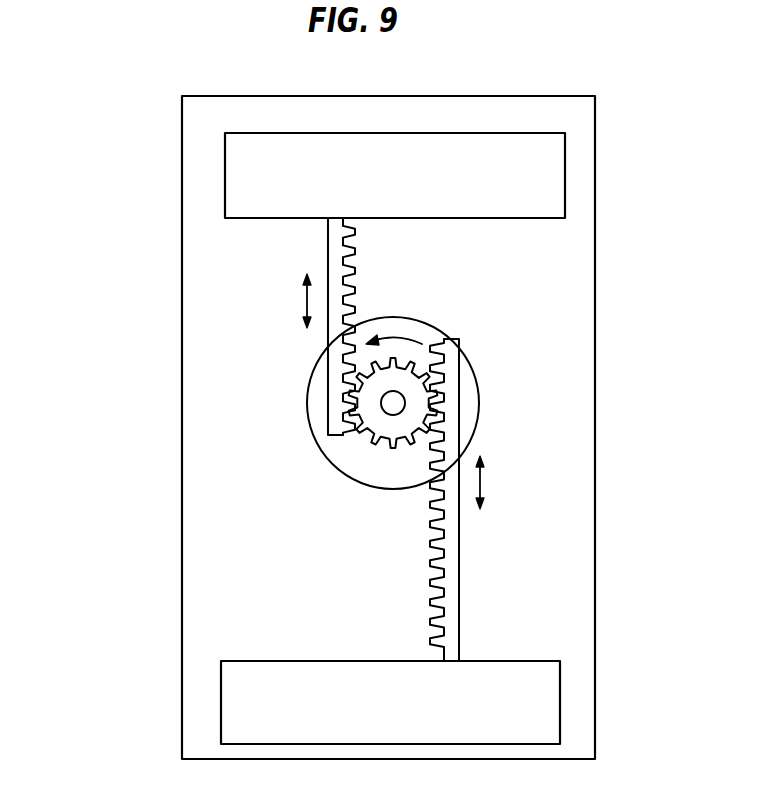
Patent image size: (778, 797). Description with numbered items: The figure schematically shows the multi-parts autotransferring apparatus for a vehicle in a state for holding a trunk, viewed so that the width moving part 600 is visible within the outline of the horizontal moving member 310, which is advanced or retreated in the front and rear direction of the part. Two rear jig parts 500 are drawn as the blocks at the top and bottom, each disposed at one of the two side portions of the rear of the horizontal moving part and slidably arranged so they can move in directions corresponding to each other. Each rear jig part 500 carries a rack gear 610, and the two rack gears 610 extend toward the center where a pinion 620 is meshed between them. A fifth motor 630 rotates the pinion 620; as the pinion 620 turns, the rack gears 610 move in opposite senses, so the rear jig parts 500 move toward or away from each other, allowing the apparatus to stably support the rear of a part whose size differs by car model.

The horizontal moving member 310 is at (580, 277).
The rear jig part 500 is at (570, 177).
The width moving part 600 is at (103, 345).
The rack gear 610 is at (447, 452).
The pinion 620 is at (388, 372).
The fifth motor 630 is at (372, 475).